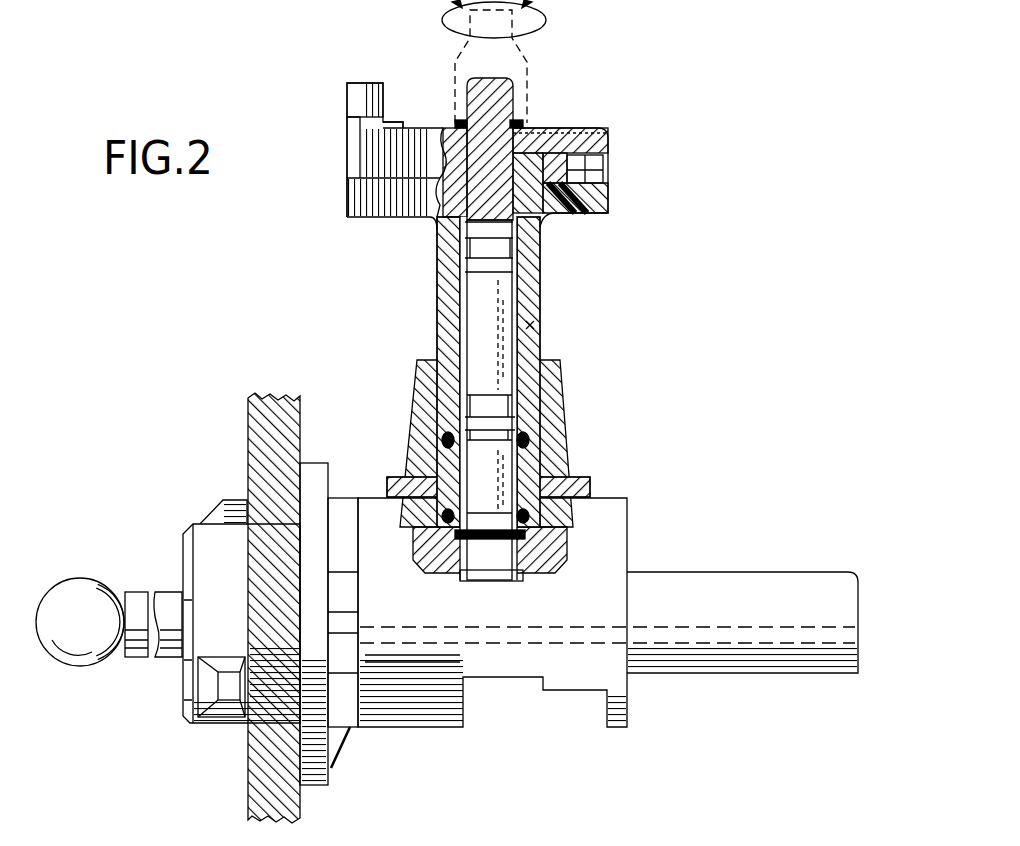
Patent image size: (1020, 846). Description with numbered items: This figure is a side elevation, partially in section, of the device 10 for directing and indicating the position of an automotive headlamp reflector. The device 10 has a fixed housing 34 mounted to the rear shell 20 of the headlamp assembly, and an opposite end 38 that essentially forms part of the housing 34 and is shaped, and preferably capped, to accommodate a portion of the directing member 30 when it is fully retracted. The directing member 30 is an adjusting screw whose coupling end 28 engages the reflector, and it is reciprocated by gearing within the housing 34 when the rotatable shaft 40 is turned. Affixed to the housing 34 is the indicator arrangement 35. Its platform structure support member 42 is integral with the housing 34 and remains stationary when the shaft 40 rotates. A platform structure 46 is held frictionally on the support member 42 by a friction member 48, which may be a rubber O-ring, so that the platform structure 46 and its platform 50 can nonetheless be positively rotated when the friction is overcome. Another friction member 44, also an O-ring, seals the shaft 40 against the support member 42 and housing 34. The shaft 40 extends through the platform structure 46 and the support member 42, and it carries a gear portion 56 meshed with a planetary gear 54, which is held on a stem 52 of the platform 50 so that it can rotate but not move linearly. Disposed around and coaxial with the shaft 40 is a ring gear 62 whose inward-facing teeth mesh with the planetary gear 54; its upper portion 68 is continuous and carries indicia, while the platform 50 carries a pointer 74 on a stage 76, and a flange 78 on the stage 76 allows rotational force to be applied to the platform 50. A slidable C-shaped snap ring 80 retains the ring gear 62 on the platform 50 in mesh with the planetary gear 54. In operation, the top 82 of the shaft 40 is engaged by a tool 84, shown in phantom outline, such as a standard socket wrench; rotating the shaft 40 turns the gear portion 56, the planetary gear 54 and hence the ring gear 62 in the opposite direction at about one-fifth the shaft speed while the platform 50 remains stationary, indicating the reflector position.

The device 10 is at (684, 416).
The rear shell 20 is at (296, 400).
The coupling end 28 is at (77, 592).
The directing member 30 is at (133, 665).
The housing 34 is at (604, 552).
The indicator arrangement 35 is at (562, 246).
The opposite end 38 is at (850, 572).
The rotatable shaft 40 is at (492, 307).
The platform structure support member 42 is at (573, 463).
The friction member 44 is at (587, 490).
The platform structure 46 is at (530, 325).
The friction member 48 is at (523, 438).
The platform 50 is at (352, 156).
The stem 52 is at (600, 128).
The planetary gear 54 is at (612, 158).
The gear portion 56 is at (547, 128).
The ring gear 62 is at (598, 138).
The upper portion 68 is at (442, 128).
The pointer 74 is at (397, 120).
The stage 76 is at (347, 148).
The flange 78 is at (355, 83).
The snap ring 80 is at (527, 122).
The top 82 is at (490, 78).
The tool 84 is at (533, 53).